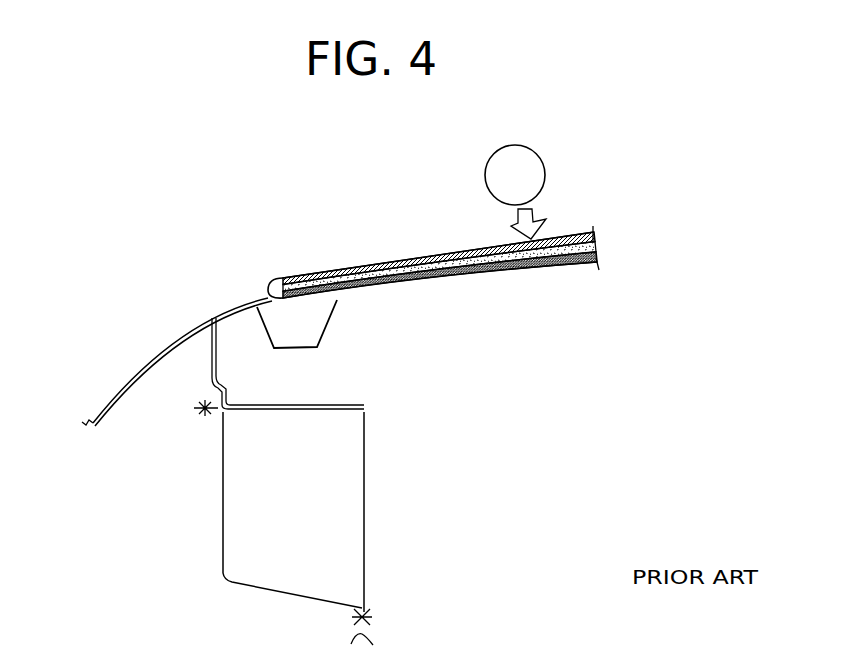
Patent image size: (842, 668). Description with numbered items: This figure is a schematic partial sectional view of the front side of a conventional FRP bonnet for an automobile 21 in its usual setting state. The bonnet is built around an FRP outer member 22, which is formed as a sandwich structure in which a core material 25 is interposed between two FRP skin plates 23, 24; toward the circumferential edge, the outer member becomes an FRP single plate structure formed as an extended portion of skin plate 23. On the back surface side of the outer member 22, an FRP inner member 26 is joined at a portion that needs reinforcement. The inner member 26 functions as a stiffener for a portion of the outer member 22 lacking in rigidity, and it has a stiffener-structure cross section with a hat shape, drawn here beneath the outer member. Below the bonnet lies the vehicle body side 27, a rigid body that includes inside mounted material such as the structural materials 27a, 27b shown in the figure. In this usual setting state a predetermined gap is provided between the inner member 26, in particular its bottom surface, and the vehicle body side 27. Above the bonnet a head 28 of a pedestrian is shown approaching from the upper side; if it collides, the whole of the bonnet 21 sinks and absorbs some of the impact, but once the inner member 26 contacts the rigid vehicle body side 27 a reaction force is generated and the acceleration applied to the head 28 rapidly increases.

The FRP bonnet for an automobile 21 is at (292, 271).
The FRP outer member 22 is at (376, 262).
The FRP skin plate 23 is at (563, 236).
The FRP skin plate 24 is at (525, 268).
The core material 25 is at (598, 244).
The FRP inner member 26 is at (338, 316).
The vehicle body side 27 is at (112, 398).
The structural material 27a is at (222, 460).
The structural material 27b is at (366, 470).
The head 28 is at (532, 148).